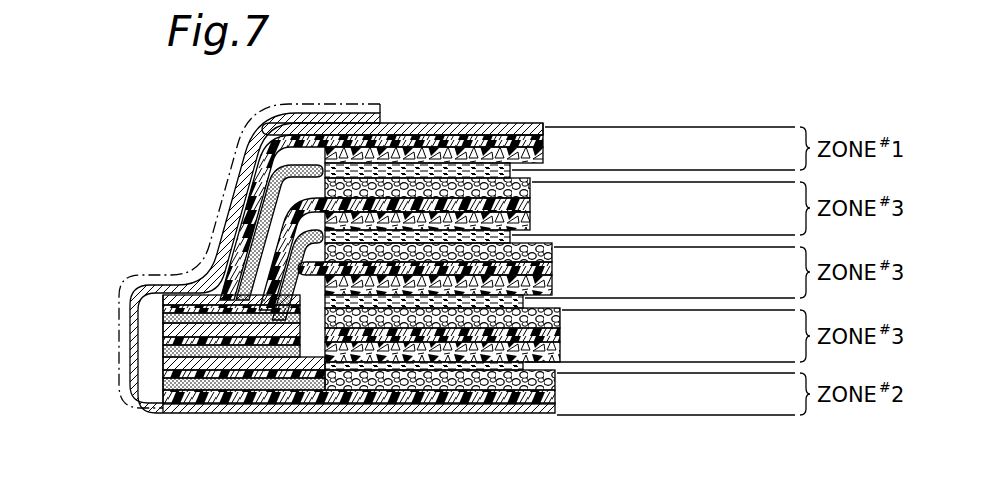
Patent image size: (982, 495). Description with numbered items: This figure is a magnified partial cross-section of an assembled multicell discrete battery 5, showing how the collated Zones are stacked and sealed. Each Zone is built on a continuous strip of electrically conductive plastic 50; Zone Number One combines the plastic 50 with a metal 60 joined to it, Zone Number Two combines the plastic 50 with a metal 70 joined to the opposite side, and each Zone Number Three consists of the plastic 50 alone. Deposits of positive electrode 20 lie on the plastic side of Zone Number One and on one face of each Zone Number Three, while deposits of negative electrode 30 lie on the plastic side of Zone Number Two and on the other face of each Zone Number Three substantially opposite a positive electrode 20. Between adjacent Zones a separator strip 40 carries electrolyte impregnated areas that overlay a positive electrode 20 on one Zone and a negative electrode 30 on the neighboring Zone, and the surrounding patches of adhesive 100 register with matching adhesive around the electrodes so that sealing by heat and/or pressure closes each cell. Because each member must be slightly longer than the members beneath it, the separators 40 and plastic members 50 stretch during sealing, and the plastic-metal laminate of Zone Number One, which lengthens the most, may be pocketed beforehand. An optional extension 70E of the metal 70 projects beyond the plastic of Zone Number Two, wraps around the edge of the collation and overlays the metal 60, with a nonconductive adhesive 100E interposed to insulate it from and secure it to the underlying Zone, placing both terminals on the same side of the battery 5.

The discrete battery 5 is at (436, 117).
The positive electrode 20 is at (545, 153).
The negative electrode 30 is at (530, 188).
The separator strip 40 is at (510, 170).
The electrically conductive plastic 50 is at (543, 140).
The metal 60 is at (543, 127).
The metal 70 is at (553, 412).
The extension of the metal strip 70E is at (228, 212).
The adhesive patch 100 is at (163, 350).
The nonconductive adhesive 100E is at (138, 312).